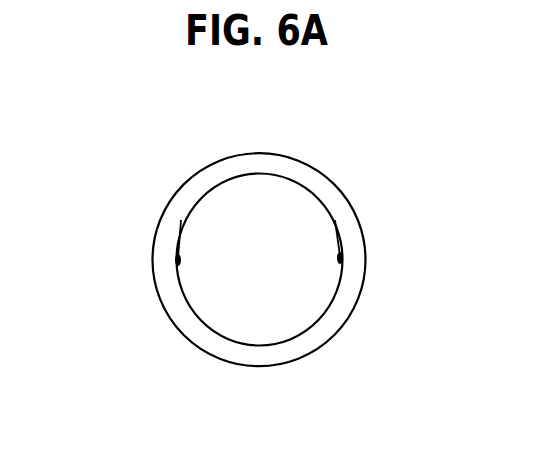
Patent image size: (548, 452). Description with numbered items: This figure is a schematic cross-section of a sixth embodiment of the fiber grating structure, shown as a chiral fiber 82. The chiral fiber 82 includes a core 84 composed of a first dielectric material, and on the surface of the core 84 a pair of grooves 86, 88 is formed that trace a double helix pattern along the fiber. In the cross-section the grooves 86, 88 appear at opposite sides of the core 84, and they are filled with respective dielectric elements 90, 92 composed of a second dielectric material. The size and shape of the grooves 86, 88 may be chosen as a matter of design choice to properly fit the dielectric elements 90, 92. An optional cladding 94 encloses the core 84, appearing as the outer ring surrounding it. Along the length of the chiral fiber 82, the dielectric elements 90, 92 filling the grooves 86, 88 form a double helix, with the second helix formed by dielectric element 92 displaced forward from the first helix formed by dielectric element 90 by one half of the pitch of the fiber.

The chiral fiber 82 is at (222, 267).
The core 84 is at (250, 275).
The groove 86 is at (335, 220).
The groove 88 is at (181, 220).
The dielectric element 90 is at (341, 259).
The dielectric element 92 is at (178, 261).
The cladding 94 is at (308, 345).